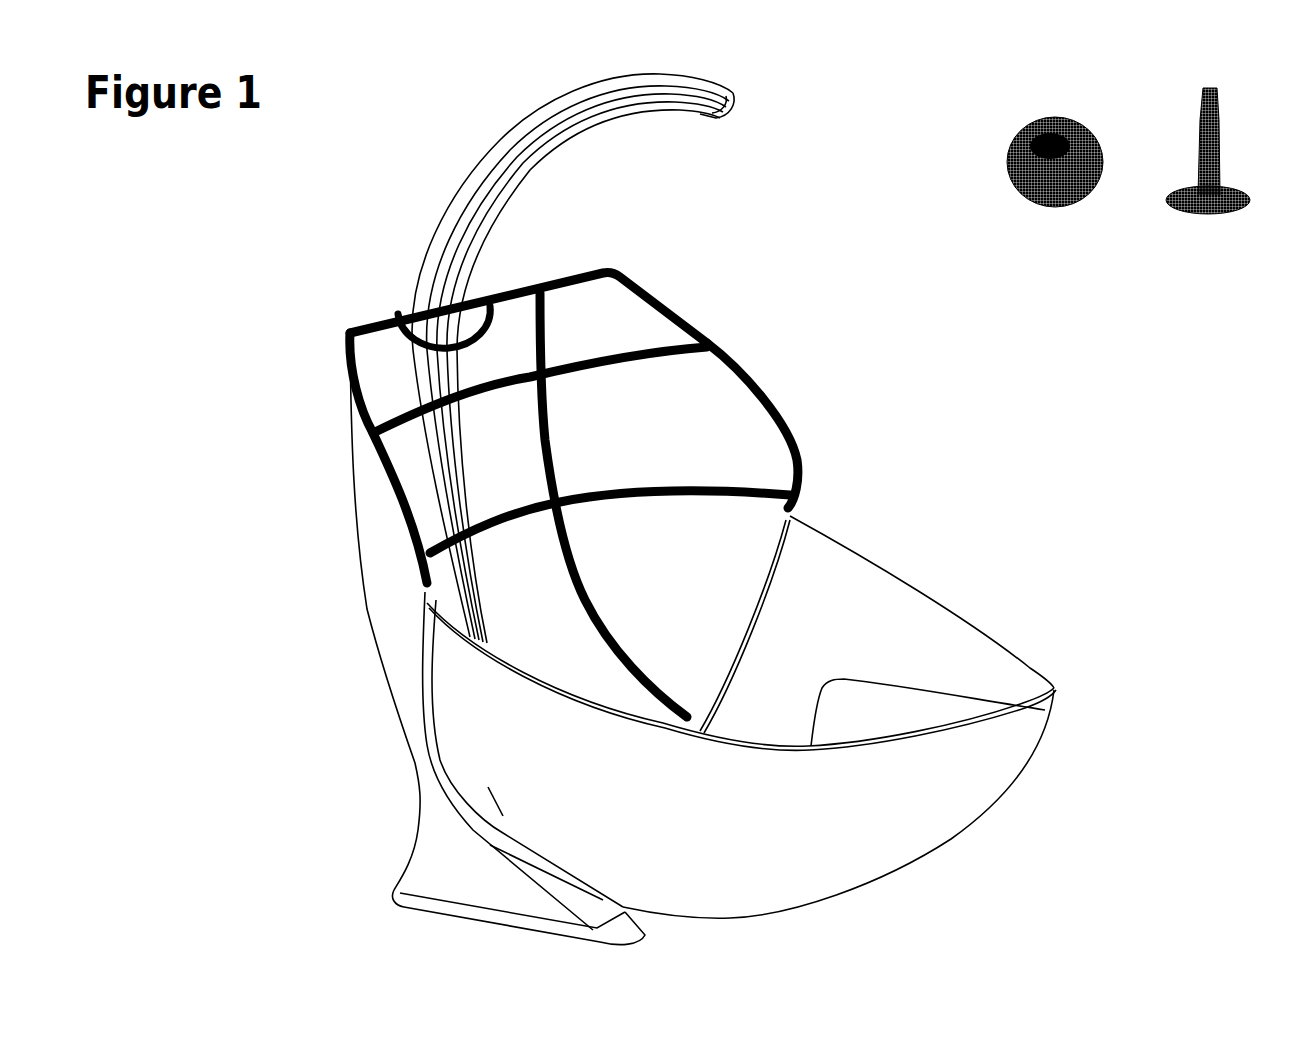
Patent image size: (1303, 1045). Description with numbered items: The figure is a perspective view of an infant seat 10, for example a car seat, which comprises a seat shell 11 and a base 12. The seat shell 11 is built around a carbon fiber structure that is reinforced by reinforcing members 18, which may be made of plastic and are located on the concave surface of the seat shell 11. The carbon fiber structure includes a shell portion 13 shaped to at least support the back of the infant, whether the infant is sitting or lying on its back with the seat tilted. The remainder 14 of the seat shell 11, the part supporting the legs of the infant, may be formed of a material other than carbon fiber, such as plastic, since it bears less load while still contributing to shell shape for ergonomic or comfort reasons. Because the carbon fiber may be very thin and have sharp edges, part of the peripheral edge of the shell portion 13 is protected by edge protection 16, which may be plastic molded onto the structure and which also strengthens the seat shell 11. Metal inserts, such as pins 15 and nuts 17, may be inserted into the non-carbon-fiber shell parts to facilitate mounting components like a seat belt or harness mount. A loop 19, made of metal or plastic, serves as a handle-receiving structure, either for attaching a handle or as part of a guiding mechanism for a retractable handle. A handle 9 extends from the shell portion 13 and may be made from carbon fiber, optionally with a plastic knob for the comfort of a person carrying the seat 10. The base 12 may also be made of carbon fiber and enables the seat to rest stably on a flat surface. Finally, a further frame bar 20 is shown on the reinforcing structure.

The handle 9 is at (381, 86).
The infant seat 10 is at (1186, 887).
The seat shell 11 is at (820, 350).
The base 12 is at (275, 798).
The shell portion 13 is at (281, 441).
The remainder of the seat shell 14 is at (1061, 557).
The pin 15 is at (1208, 122).
The edge protection 16 is at (936, 388).
The nut 17 is at (1055, 118).
The reinforcing members 18 is at (276, 612).
The loop 19 is at (316, 220).
The horizontal bar 20 is at (796, 268).